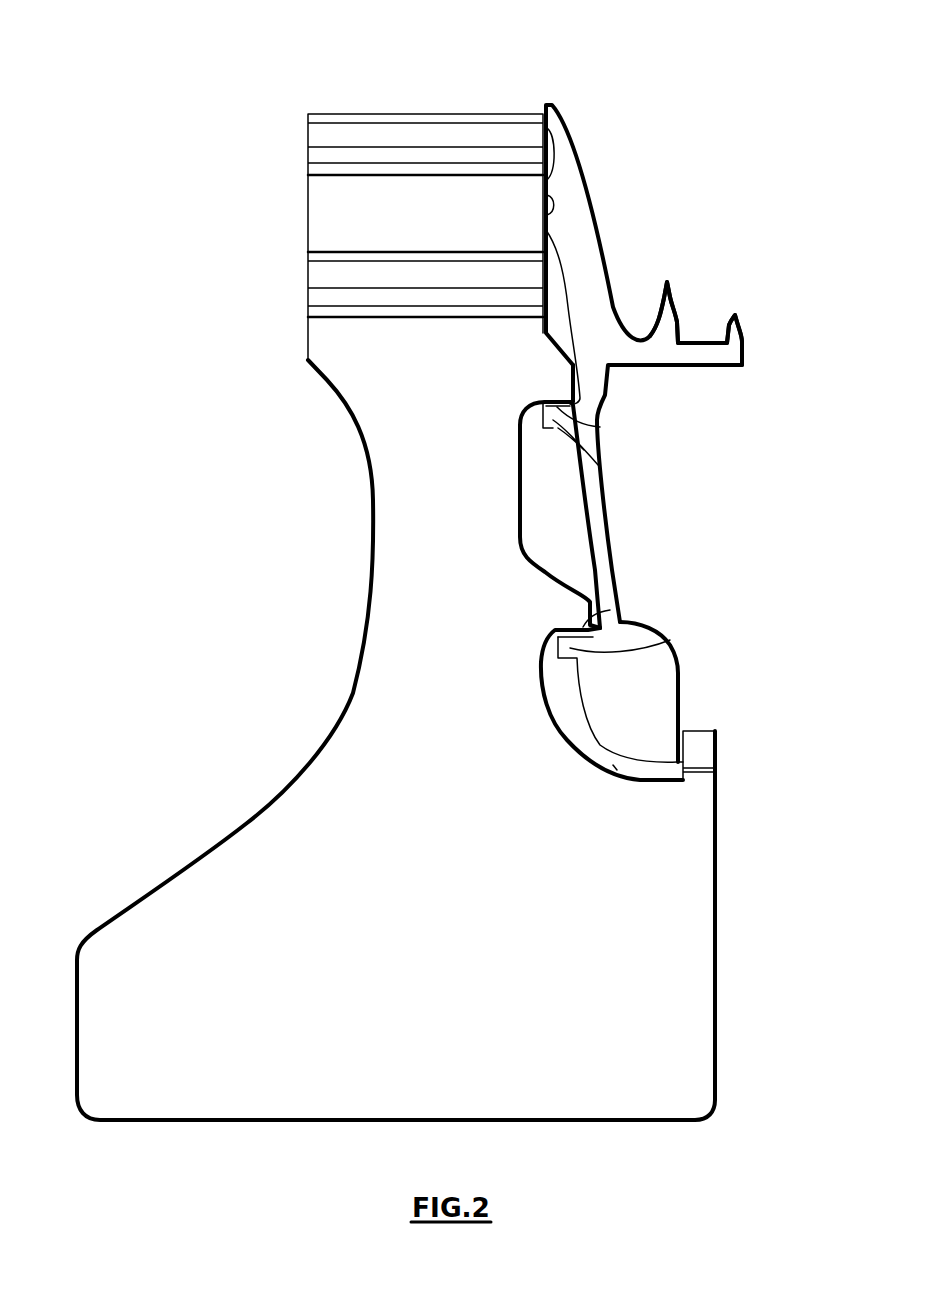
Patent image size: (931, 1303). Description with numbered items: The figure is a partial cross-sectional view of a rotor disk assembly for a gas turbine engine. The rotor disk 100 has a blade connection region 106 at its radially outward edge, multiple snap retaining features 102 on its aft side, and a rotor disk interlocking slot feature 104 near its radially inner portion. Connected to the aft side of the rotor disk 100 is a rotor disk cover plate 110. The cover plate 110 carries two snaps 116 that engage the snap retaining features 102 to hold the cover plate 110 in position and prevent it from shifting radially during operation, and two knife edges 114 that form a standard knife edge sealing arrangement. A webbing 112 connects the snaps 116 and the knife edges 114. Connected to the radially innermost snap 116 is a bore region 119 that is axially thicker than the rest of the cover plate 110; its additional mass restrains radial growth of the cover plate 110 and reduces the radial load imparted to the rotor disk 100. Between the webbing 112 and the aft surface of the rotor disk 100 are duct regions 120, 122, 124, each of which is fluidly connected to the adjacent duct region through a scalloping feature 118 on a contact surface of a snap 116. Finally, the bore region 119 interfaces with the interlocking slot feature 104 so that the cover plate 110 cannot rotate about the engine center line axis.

The rotor disk 100 is at (445, 950).
The snap retaining feature 102 is at (558, 392).
The rotor disk interlocking slot feature 104 is at (703, 753).
The blade connection region 106 is at (346, 200).
The rotor disk cover plate 110 is at (617, 511).
The webbing 112 is at (580, 272).
The knife edge 114 is at (670, 292).
The snap 116 is at (580, 447).
The scalloping feature 118 is at (600, 427).
The bore region 119 is at (643, 707).
The duct region 120 is at (558, 330).
The duct region 122 is at (570, 529).
The duct region 124 is at (613, 765).